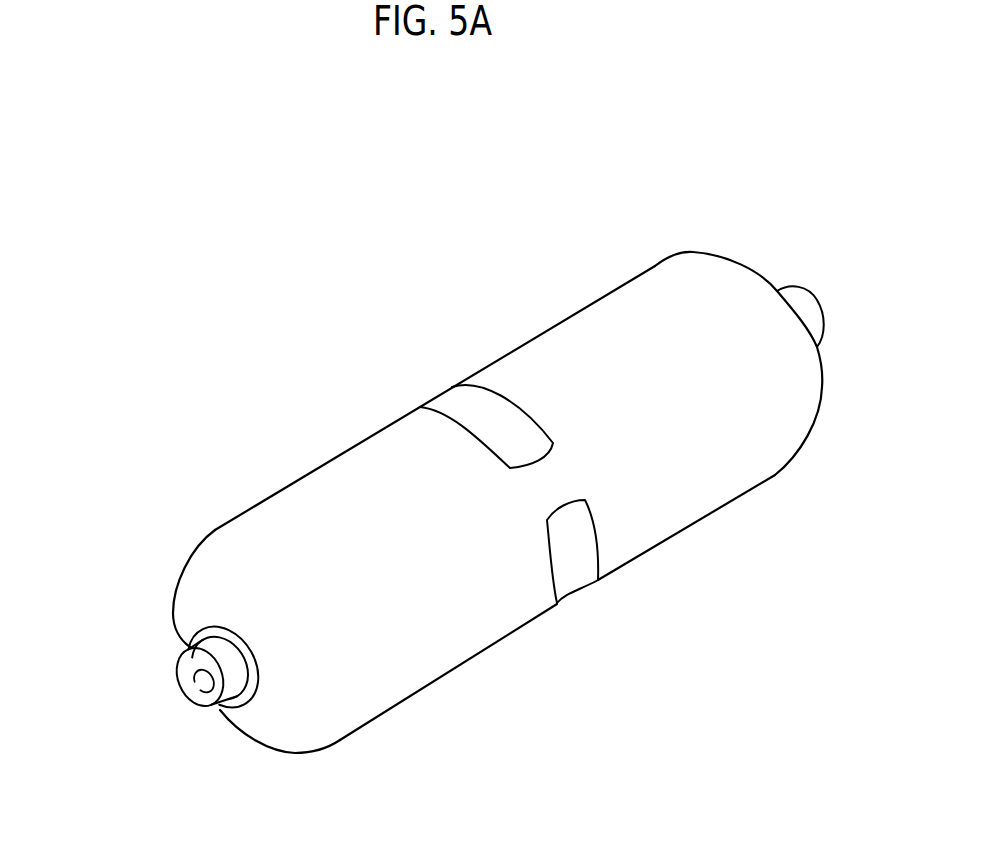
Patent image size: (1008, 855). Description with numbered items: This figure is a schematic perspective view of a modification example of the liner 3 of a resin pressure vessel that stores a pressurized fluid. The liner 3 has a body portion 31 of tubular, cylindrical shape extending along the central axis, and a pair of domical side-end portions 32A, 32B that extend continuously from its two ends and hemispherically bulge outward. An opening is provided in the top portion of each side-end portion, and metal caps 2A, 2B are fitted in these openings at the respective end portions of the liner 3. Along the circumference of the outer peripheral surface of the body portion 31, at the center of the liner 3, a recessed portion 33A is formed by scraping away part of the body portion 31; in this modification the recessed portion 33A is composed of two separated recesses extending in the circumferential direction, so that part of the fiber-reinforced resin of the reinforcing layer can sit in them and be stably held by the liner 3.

The liner 3 is at (459, 469).
The body portion 31 is at (585, 353).
The side-end portion 32A is at (212, 587).
The side-end portion 32B is at (728, 275).
The recessed portion 33A is at (450, 403).
The cap 2A is at (202, 682).
The cap 2B is at (805, 310).